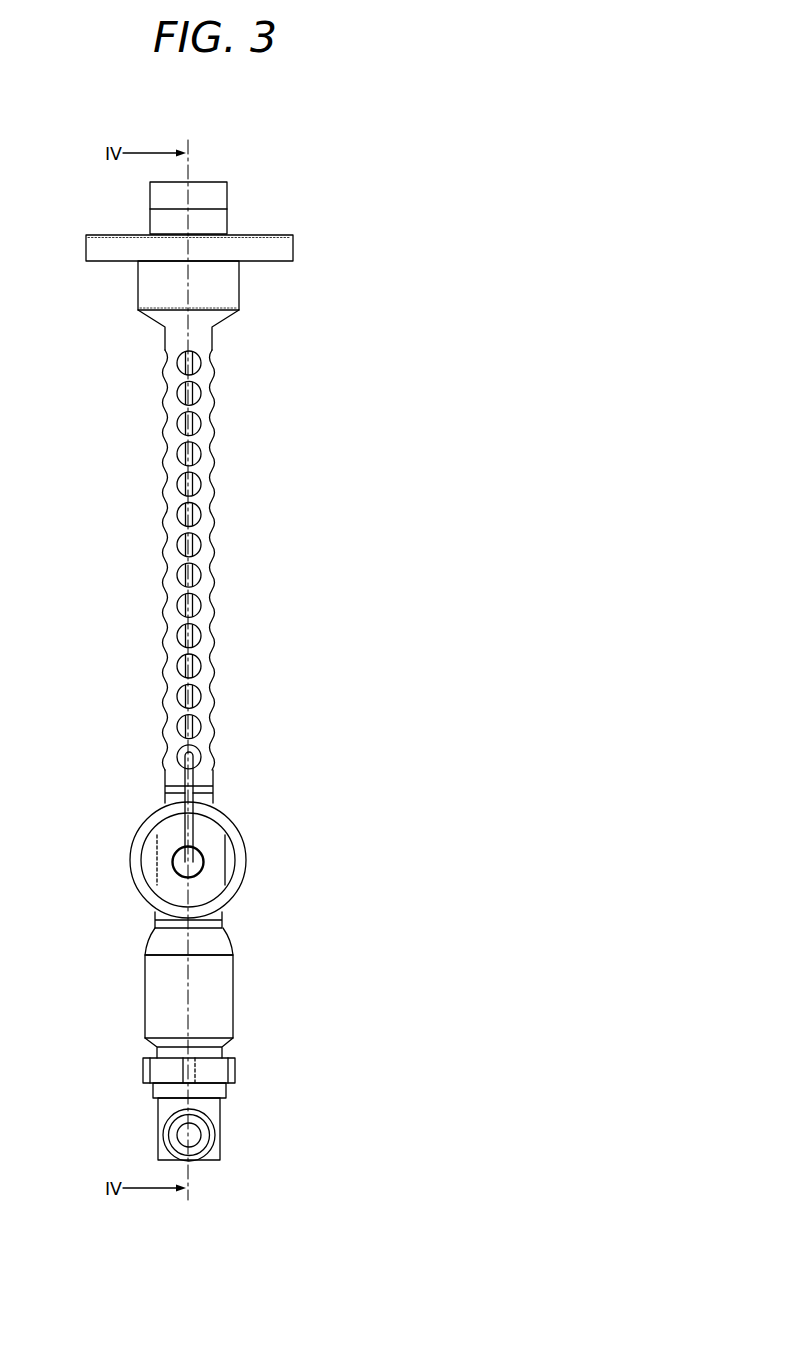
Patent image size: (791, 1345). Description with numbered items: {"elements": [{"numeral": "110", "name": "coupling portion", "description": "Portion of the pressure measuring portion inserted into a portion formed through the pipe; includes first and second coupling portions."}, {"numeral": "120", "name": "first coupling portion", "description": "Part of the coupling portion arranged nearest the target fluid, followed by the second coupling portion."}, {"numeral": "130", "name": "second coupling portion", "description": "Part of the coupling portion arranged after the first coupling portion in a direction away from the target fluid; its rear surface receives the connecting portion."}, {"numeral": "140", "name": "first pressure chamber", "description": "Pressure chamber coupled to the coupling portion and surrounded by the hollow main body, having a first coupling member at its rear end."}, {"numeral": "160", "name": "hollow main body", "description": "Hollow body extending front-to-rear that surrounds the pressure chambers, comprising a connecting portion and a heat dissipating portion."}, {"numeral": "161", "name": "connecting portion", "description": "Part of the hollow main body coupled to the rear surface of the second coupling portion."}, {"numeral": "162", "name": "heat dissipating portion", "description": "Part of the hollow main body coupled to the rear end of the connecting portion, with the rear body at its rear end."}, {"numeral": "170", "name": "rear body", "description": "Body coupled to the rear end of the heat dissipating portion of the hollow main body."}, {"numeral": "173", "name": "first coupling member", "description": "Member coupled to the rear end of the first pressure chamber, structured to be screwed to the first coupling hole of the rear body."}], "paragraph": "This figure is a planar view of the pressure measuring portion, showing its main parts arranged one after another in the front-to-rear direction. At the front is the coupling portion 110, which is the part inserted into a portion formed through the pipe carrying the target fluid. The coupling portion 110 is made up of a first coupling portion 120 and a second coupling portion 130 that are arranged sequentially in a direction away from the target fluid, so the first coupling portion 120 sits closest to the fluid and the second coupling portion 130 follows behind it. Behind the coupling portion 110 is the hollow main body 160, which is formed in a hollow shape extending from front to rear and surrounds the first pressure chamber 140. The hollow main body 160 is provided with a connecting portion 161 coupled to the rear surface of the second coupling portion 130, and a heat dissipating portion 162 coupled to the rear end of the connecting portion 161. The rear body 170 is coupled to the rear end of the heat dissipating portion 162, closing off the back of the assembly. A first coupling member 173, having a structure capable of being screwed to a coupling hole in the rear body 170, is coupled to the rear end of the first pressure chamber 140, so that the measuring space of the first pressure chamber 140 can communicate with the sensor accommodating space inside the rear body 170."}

The fixing member 110 is at (254, 221).
The head portion 120 is at (242, 196).
The flange portion 130 is at (307, 253).
The ring portion 140 is at (198, 795).
The connecting member 160 is at (250, 540).
The connection portion 161 is at (222, 317).
The bead portion 162 is at (206, 418).
The valve assembly 170 is at (248, 993).
The pin 173 is at (176, 862).